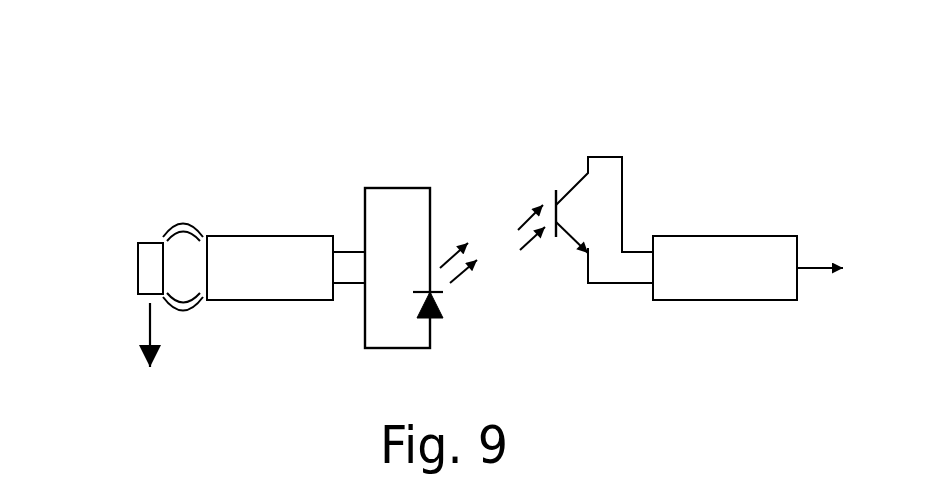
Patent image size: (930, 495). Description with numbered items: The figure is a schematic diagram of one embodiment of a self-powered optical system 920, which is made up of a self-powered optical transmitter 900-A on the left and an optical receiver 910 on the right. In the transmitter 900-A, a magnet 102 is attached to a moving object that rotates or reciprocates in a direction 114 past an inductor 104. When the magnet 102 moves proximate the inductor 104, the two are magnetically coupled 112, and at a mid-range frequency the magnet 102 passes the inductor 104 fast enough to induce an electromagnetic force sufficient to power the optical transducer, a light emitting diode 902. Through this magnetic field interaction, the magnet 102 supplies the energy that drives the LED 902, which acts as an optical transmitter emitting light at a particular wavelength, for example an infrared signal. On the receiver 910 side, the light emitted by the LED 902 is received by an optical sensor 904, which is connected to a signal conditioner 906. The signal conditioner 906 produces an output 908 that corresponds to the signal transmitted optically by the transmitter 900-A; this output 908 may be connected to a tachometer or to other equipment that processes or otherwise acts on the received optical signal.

The self-powered optical transmitter 900-A is at (142, 102).
The optical system 920 is at (297, 63).
The optical receiver 910 is at (748, 120).
The magnet 102 is at (138, 268).
The magnetic coupling 112 is at (181, 226).
The direction 114 is at (149, 325).
The inductor 104 is at (273, 236).
The light emitting diode 902 is at (442, 308).
The optical sensor 904 is at (553, 195).
The signal conditioner 906 is at (720, 236).
The output 908 is at (808, 272).